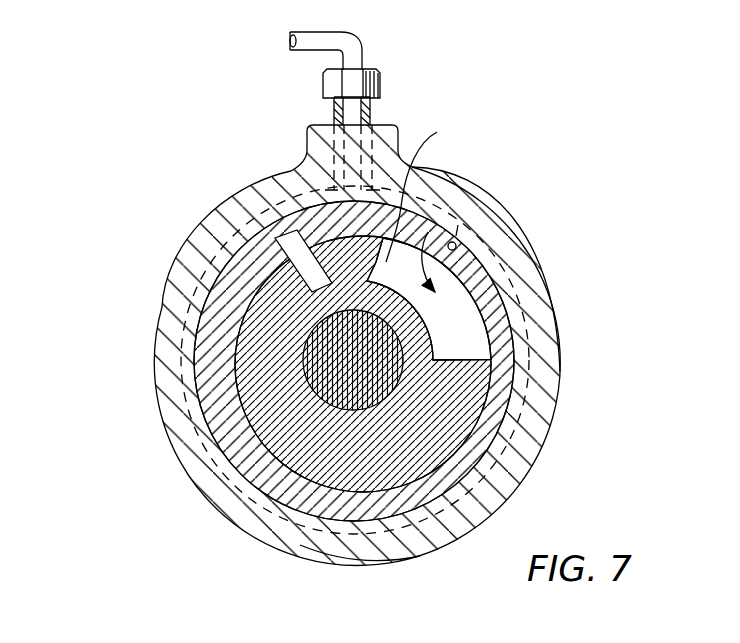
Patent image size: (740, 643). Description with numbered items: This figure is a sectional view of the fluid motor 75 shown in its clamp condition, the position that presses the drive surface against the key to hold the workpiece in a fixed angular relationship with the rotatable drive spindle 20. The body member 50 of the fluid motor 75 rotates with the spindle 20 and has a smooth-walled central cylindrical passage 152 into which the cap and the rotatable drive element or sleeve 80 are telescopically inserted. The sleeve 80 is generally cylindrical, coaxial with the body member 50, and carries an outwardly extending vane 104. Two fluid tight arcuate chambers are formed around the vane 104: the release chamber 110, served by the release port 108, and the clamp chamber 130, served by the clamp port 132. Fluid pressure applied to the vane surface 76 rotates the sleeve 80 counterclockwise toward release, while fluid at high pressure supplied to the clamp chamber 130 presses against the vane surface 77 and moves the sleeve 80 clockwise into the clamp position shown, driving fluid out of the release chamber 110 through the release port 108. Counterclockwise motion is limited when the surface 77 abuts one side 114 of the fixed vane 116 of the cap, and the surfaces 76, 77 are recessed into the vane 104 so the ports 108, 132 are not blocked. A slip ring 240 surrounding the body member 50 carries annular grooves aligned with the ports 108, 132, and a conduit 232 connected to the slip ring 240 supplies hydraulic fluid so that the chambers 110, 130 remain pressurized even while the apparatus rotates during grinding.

The spindle 20 is at (320, 357).
The body member 50 is at (450, 462).
The fluid motor 75 is at (288, 156).
The vane surface 76 is at (290, 252).
The vane surface 77 is at (505, 333).
The rotatable drive element 80 is at (442, 333).
The vane 104 is at (437, 472).
The release port 108 is at (328, 212).
The release chamber 110 is at (322, 205).
The side of the fixed vane 114 is at (380, 246).
The fixed vane 116 is at (432, 192).
The clamp chamber 130 is at (458, 225).
The clamp port 132 is at (453, 242).
The central cylindrical passage 152 is at (458, 270).
The conduit 232 is at (362, 40).
The slip ring 240 is at (462, 540).